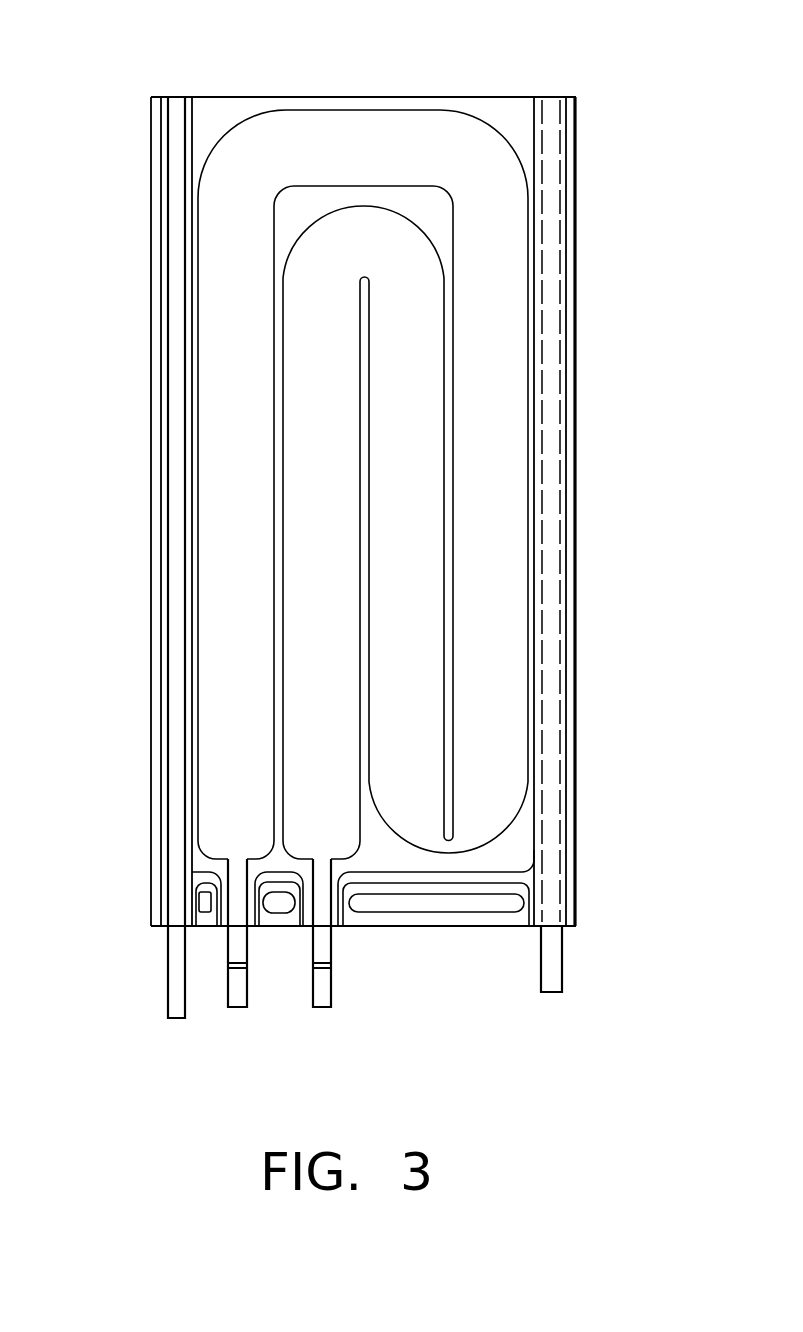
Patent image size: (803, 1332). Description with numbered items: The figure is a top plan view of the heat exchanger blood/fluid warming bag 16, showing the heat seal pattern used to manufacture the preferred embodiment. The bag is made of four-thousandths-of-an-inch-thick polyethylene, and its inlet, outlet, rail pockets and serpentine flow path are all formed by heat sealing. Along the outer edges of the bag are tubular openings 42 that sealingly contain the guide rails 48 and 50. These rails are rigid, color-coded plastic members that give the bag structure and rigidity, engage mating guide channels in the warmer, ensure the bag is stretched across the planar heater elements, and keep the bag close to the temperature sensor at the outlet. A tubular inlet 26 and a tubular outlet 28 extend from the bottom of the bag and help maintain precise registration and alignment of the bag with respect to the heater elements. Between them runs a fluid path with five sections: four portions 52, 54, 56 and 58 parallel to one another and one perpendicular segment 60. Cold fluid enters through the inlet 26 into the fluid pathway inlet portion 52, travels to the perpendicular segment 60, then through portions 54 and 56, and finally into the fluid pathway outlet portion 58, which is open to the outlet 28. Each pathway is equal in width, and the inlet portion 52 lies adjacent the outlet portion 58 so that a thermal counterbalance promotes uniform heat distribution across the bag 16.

The heat exchanger blood/fluid warming bag 16 is at (442, 922).
The tubular inlet 26 is at (248, 993).
The tubular outlet 28 is at (332, 993).
The tubular openings 42 is at (153, 106).
The guide rail 48 is at (173, 1017).
The guide rail 50 is at (549, 982).
The fluid pathway inlet portion 52 is at (213, 527).
The fluid path portion 54 is at (506, 449).
The fluid path portion 56 is at (425, 362).
The fluid pathway outlet portion 58 is at (297, 664).
The perpendicular segment 60 is at (370, 123).